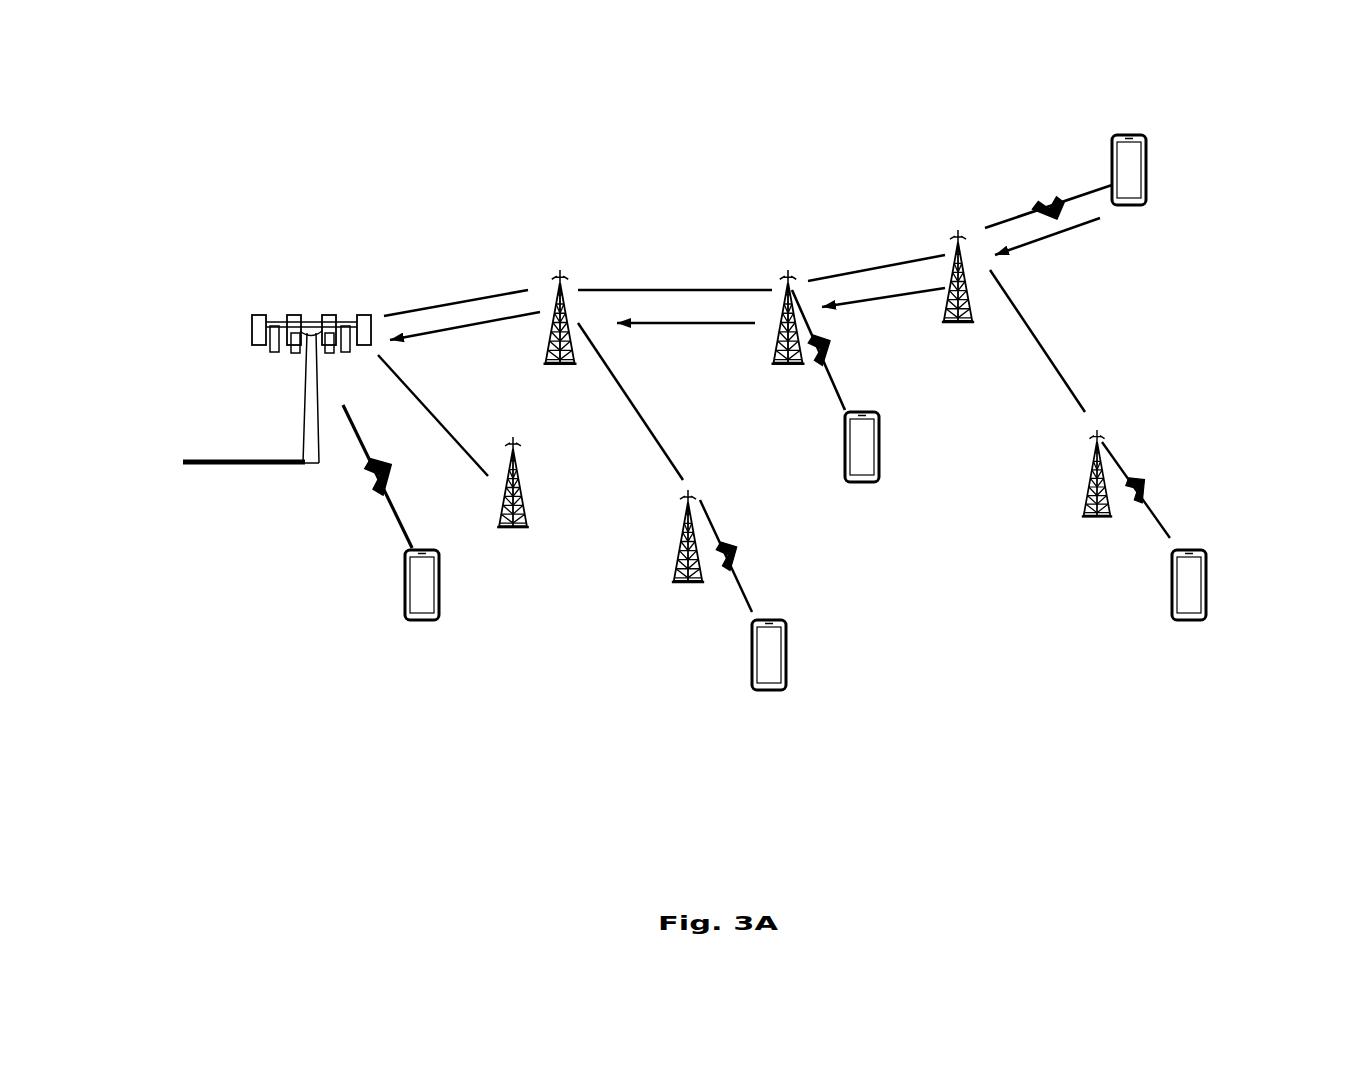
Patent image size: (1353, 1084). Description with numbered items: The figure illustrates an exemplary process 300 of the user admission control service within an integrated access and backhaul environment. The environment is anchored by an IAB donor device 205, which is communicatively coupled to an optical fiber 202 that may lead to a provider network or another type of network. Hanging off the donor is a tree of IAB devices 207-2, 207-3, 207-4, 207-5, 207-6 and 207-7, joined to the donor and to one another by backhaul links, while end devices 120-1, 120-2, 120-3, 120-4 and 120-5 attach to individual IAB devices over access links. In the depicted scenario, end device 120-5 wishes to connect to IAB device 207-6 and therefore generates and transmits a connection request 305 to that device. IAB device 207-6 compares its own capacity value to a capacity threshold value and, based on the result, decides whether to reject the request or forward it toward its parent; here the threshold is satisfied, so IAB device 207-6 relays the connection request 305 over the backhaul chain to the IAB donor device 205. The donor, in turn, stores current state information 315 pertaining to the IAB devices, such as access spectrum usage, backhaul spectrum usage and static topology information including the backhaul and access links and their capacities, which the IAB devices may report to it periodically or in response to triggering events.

The process 300 is at (280, 95).
The IAB donor device 205 is at (272, 389).
The current state information 315 is at (282, 257).
The optical fiber 202 is at (244, 508).
The connection request 305 is at (897, 303).
The IAB device 207-2 is at (527, 540).
The IAB device 207-3 is at (568, 269).
The IAB device 207-4 is at (666, 585).
The IAB device 207-5 is at (800, 270).
The IAB device 207-6 is at (978, 233).
The IAB device 207-7 is at (1072, 521).
The end device 120-1 is at (440, 640).
The end device 120-2 is at (786, 709).
The end device 120-3 is at (880, 501).
The end device 120-4 is at (1205, 640).
The end device 120-5 is at (1198, 170).